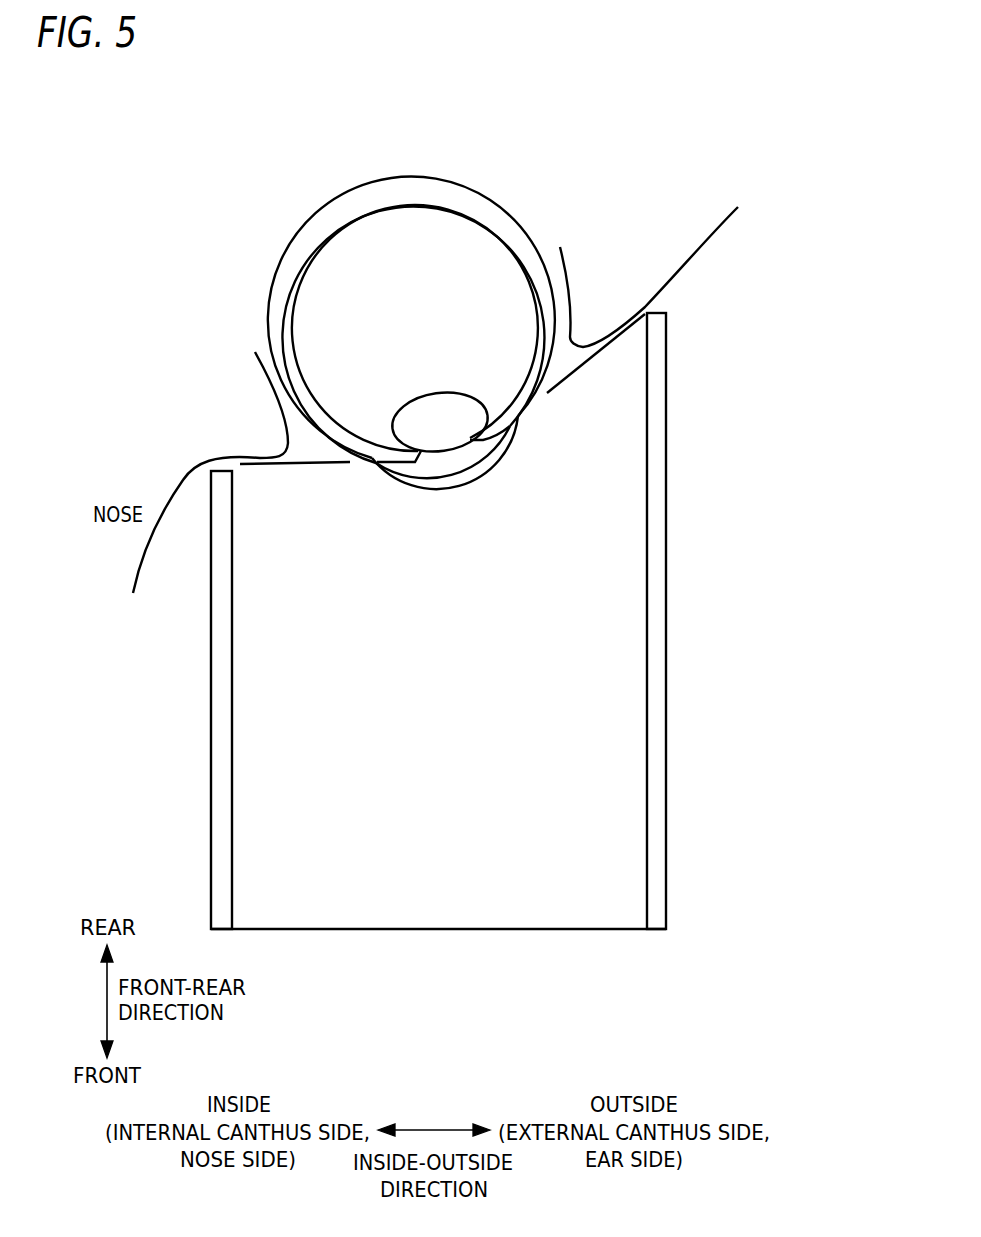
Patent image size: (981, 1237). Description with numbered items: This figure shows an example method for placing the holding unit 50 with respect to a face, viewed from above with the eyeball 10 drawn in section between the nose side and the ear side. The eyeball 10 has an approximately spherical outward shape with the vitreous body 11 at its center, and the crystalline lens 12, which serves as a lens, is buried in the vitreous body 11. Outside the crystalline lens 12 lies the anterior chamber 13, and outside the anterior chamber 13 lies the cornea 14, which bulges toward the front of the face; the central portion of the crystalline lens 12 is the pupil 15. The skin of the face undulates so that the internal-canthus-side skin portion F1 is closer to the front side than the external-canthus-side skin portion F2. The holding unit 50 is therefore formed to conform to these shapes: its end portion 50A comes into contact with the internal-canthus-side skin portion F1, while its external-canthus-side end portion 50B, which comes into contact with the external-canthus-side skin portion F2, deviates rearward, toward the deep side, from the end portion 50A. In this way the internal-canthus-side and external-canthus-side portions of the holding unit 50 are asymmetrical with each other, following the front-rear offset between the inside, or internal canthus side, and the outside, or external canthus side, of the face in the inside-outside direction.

The eyeball 10 is at (474, 165).
The vitreous body 11 is at (352, 287).
The crystalline lens 12 is at (410, 425).
The anterior chamber 13 is at (425, 466).
The cornea 14 is at (498, 458).
The pupil 15 is at (445, 452).
The holding unit 50 is at (489, 606).
The end portion 50A is at (227, 470).
The external-canthus-side end portion 50B is at (657, 312).
The internal-canthus-side skin portion F1 is at (267, 463).
The external-canthus-side skin portion F2 is at (583, 347).